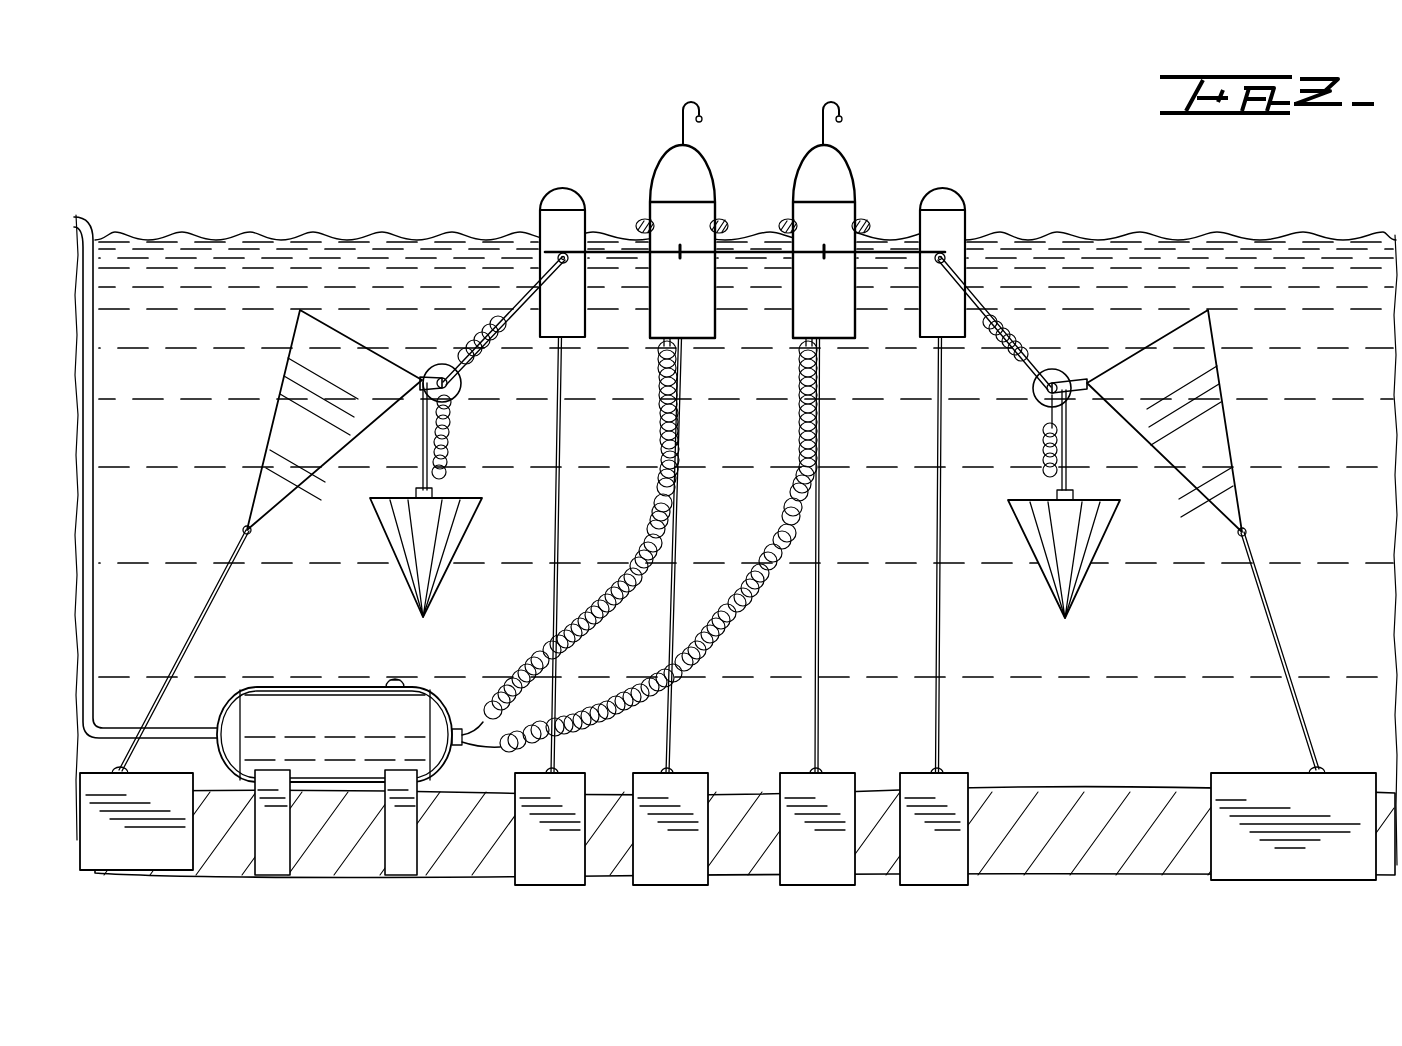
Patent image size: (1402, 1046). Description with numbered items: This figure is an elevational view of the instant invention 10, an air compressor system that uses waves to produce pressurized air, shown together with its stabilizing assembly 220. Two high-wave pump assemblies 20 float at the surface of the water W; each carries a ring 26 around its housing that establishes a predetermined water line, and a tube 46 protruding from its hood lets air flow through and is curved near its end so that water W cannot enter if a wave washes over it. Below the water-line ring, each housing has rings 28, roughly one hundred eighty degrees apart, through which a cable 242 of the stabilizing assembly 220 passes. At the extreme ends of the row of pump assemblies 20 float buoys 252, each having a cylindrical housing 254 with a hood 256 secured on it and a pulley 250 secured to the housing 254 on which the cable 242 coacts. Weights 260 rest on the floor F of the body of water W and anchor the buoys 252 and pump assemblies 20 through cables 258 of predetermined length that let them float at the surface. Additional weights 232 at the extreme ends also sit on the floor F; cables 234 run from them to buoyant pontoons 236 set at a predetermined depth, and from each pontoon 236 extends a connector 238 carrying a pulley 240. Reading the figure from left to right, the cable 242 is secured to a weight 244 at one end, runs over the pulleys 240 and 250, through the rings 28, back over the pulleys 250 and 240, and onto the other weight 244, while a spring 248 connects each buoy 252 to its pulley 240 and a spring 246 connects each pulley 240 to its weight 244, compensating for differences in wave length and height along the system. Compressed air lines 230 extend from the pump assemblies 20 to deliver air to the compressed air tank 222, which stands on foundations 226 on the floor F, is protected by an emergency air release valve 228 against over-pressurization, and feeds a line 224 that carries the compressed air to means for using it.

The instant invention 10 is at (378, 149).
The high-wave pump assembly 20 is at (660, 148).
The ring 26 is at (641, 222).
The rings 28 is at (564, 250).
The tube 46 is at (689, 108).
The stabilizing assembly 220 is at (256, 381).
The compressed air tank 222 is at (350, 735).
The line 224 is at (95, 446).
The foundations 226 is at (386, 866).
The emergency air release valve 228 is at (393, 676).
The compressed air lines 230 is at (622, 598).
The weights 232 is at (150, 860).
The cables 234 is at (182, 650).
The pontoons 236 is at (340, 433).
The connector 238 is at (432, 380).
The pulley 240 is at (444, 362).
The cable 242 is at (600, 250).
The weights 244 is at (396, 541).
The spring 246 is at (451, 416).
The spring 248 is at (492, 346).
The pulley 250 is at (546, 262).
The buoys 252 is at (536, 220).
The cylindrical housing 254 is at (566, 318).
The hood 256 is at (556, 200).
The cables 258 is at (558, 516).
The weights 260 is at (580, 875).
The floor F is at (1107, 790).
The water W is at (1312, 385).